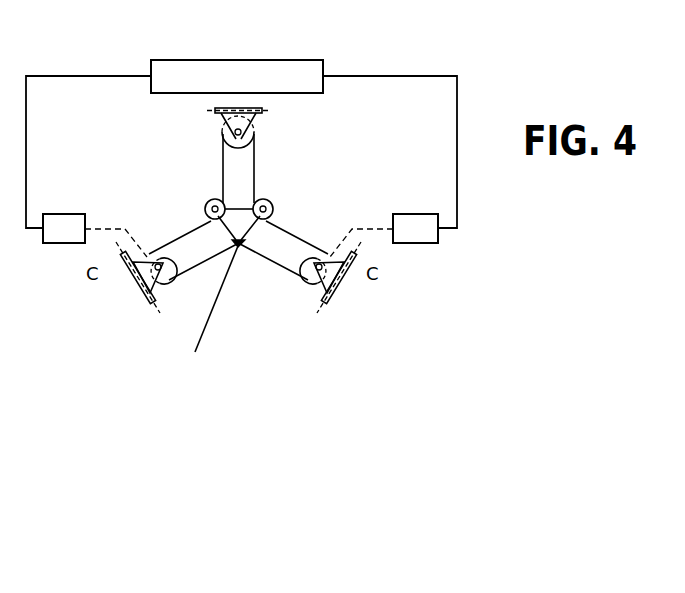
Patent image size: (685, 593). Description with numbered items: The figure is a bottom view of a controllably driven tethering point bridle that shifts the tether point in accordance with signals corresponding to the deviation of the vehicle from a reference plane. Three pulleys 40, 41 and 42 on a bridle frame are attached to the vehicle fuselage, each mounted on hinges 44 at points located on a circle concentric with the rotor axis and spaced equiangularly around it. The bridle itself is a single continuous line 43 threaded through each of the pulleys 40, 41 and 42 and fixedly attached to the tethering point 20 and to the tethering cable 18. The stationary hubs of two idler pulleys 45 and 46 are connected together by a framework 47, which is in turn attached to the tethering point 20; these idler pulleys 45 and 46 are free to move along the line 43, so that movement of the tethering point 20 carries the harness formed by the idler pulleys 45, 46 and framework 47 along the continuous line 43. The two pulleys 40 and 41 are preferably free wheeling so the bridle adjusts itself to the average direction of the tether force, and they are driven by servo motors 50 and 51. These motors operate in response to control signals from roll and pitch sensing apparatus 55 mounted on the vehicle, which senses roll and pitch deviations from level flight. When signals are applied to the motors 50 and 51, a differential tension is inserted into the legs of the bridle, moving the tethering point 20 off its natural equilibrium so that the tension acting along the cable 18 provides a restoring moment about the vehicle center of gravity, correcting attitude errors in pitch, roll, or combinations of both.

The roll and pitch sensing apparatus 55 is at (256, 60).
The hinges 44 is at (226, 128).
The pulley 42 is at (254, 140).
The continuous line 43 is at (255, 165).
The framework 47 is at (247, 208).
The idler pulley 45 is at (206, 208).
The idler pulley 46 is at (272, 208).
The servo motor 50 is at (77, 214).
The servo motor 51 is at (412, 214).
The pulley 40 is at (170, 281).
The pulley 41 is at (311, 276).
The tethering point 20 is at (240, 247).
The tethering cable 18 is at (221, 303).